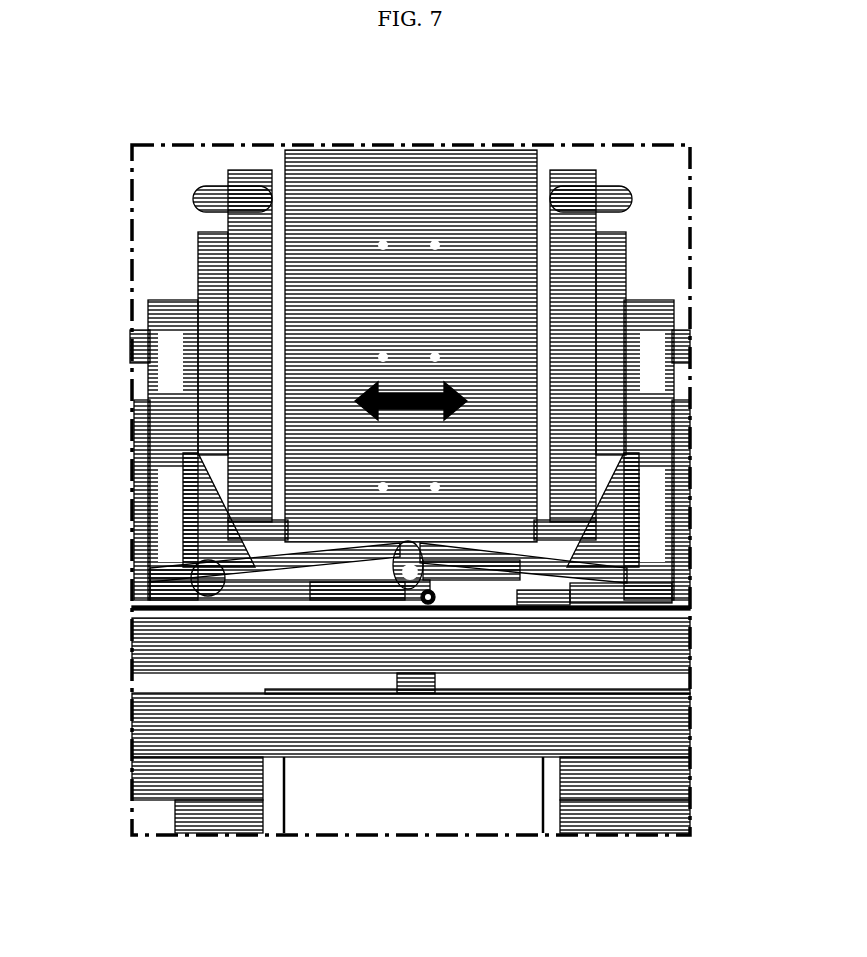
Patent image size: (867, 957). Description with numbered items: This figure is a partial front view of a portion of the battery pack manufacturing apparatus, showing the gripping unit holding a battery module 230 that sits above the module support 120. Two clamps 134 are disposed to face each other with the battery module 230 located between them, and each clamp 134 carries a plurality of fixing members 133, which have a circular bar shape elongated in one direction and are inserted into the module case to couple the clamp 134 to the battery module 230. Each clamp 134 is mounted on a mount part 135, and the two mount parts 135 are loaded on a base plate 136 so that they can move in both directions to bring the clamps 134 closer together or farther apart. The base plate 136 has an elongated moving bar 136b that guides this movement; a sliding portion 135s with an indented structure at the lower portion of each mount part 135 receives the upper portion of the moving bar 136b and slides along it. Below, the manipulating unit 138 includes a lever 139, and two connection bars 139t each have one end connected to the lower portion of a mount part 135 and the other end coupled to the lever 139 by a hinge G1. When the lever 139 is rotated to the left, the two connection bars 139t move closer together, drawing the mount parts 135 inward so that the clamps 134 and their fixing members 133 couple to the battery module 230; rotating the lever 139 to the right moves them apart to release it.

The battery module 230 is at (438, 118).
The fixing member 133 is at (204, 193).
The clamp 134 is at (210, 250).
The mount part 135 is at (160, 316).
The sliding portion 135s is at (665, 573).
The base plate 136 is at (152, 616).
The moving bar 136b is at (688, 606).
The manipulating unit 138 is at (428, 640).
The lever 139 is at (245, 581).
The connection bar 139t is at (537, 560).
The module support 120 is at (330, 553).
The hinge G1 is at (408, 560).